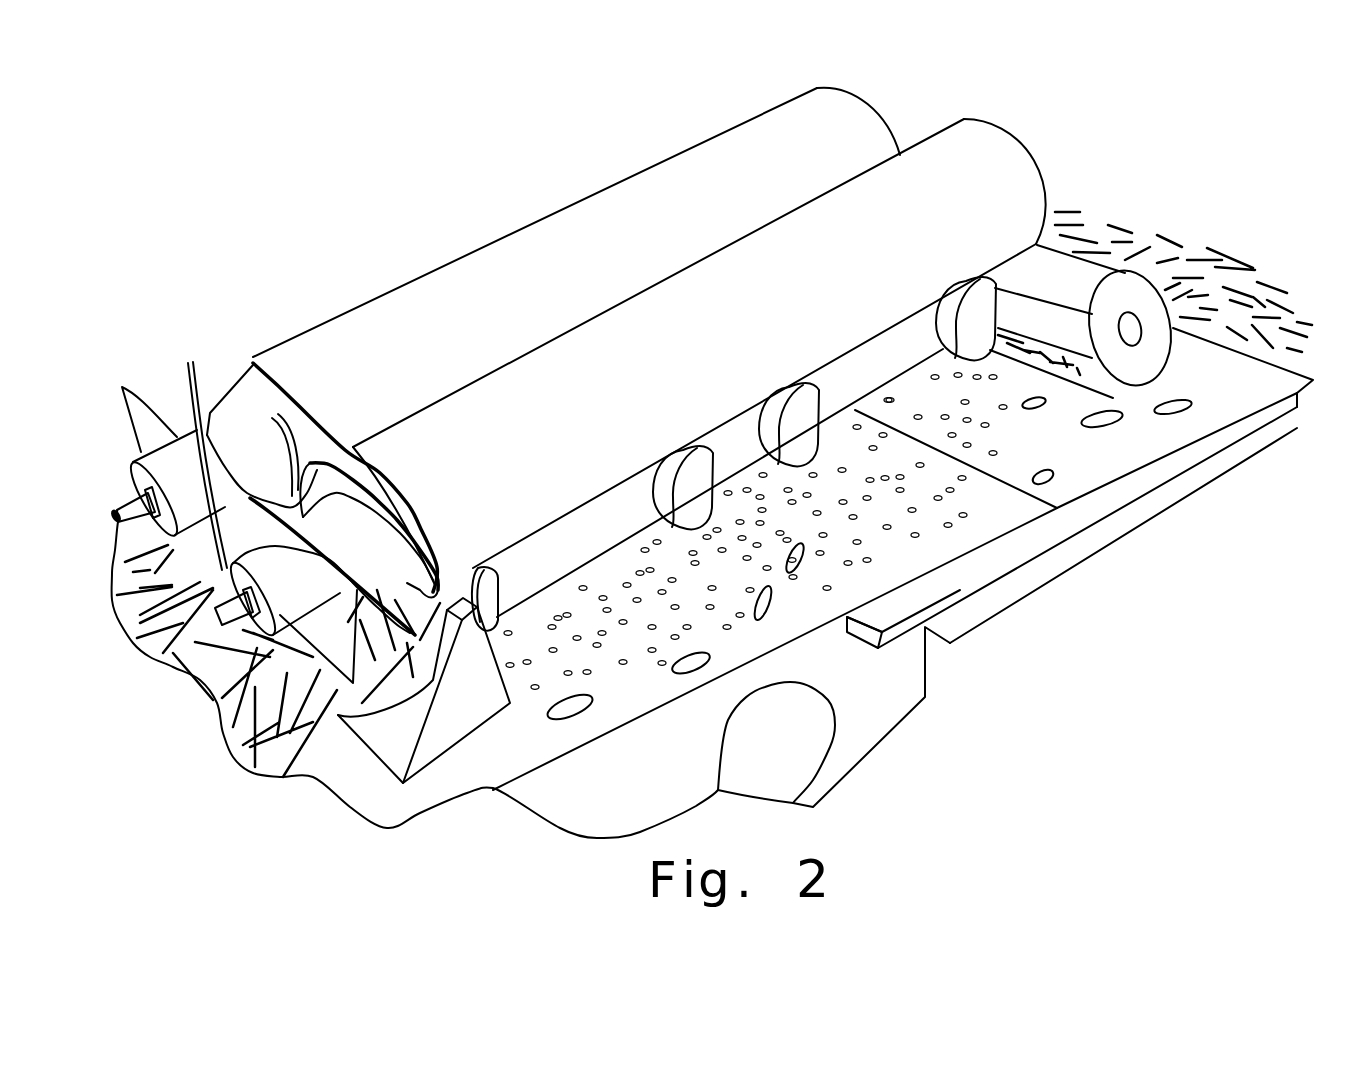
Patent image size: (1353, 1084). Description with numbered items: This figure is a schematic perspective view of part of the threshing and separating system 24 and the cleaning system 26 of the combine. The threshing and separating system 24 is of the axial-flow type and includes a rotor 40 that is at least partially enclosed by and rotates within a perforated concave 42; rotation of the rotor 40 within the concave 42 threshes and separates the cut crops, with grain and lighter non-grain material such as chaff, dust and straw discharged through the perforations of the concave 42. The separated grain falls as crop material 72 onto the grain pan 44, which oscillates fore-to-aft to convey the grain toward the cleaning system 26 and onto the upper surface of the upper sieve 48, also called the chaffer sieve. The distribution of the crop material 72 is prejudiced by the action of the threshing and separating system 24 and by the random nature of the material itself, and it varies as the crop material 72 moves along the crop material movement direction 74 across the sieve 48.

The threshing and separating system 24 is at (310, 288).
The cleaning system 26 is at (1080, 618).
The rotor 40 is at (130, 506).
The perforated concave 42 is at (645, 466).
The grain pan 44 is at (638, 722).
The upper sieve 48 is at (1243, 427).
The crop material 72 is at (1189, 423).
The crop material movement direction 74 is at (1010, 463).